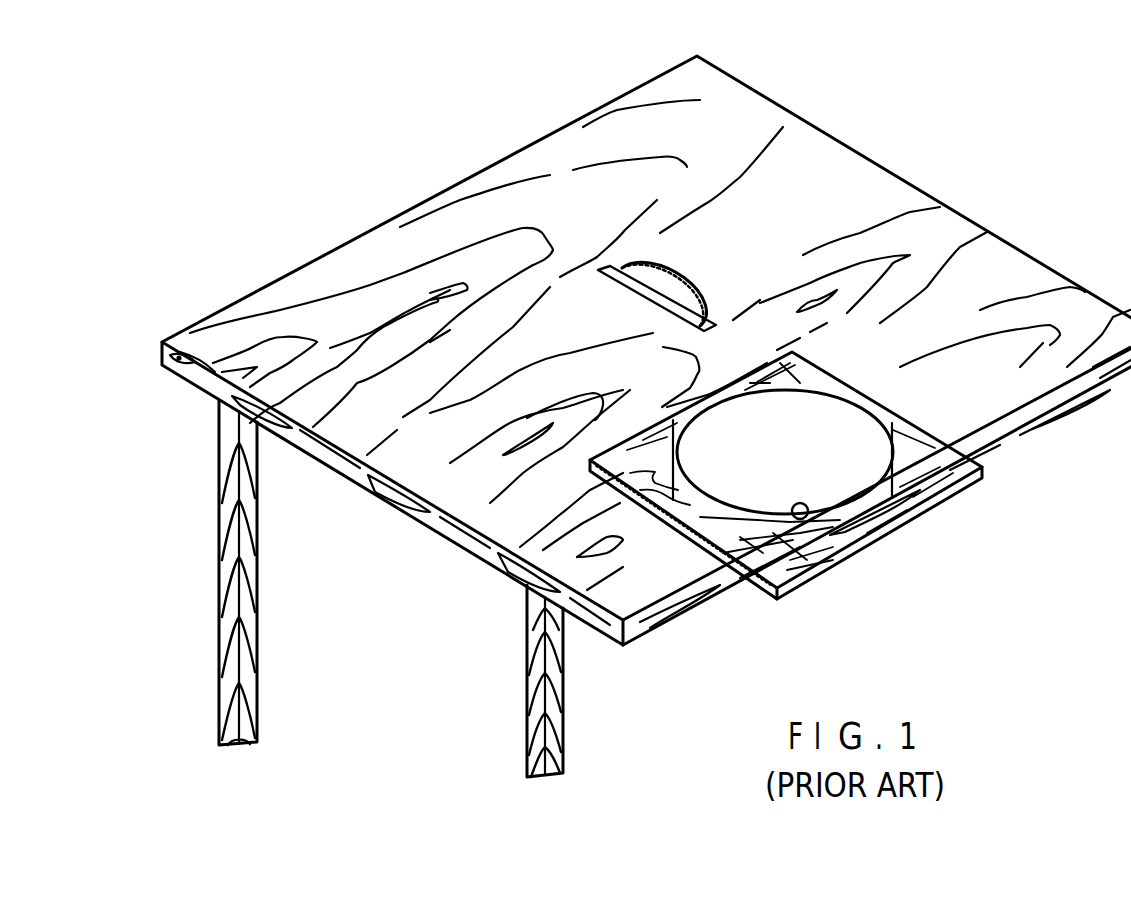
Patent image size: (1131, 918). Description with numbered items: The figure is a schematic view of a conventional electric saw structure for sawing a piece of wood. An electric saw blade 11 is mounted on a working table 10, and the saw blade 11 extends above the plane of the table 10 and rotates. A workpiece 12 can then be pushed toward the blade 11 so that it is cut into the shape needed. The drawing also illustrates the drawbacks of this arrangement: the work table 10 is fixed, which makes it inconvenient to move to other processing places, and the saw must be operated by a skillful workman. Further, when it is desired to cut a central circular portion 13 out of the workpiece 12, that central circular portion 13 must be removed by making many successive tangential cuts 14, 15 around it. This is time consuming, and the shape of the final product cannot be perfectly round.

The working table 10 is at (440, 222).
The electric saw blade 11 is at (628, 270).
The workpiece 12 is at (765, 560).
The central circular portion 13 is at (813, 514).
The tangential cut 14 is at (970, 450).
The tangential cut 15 is at (917, 507).